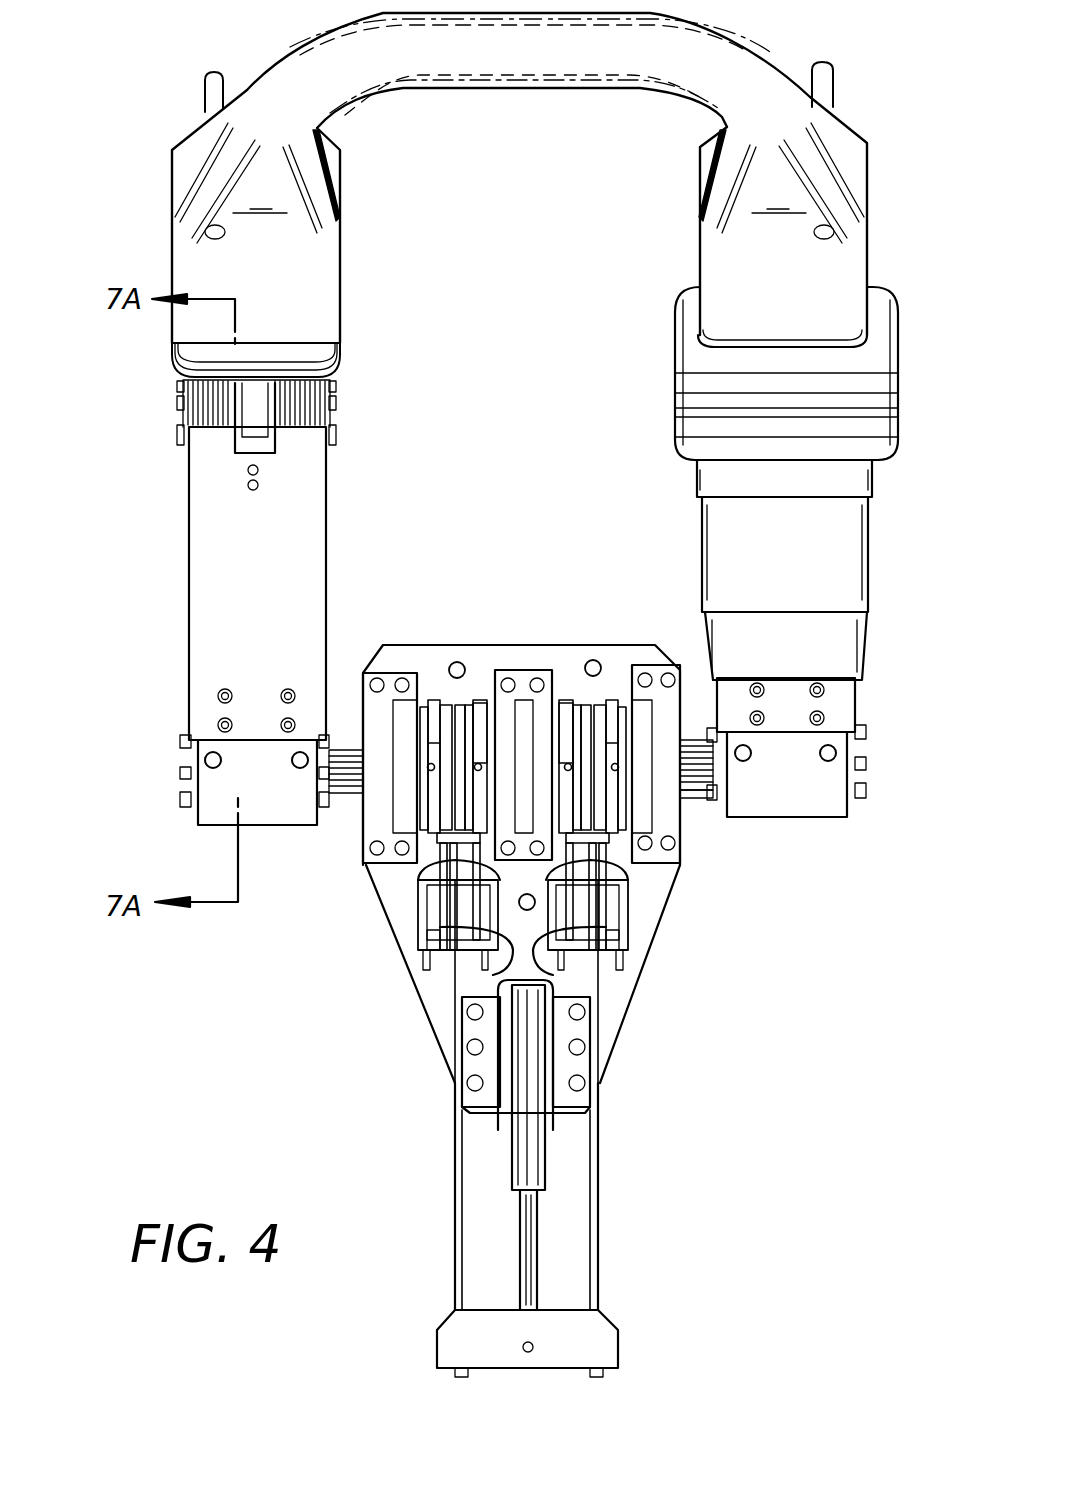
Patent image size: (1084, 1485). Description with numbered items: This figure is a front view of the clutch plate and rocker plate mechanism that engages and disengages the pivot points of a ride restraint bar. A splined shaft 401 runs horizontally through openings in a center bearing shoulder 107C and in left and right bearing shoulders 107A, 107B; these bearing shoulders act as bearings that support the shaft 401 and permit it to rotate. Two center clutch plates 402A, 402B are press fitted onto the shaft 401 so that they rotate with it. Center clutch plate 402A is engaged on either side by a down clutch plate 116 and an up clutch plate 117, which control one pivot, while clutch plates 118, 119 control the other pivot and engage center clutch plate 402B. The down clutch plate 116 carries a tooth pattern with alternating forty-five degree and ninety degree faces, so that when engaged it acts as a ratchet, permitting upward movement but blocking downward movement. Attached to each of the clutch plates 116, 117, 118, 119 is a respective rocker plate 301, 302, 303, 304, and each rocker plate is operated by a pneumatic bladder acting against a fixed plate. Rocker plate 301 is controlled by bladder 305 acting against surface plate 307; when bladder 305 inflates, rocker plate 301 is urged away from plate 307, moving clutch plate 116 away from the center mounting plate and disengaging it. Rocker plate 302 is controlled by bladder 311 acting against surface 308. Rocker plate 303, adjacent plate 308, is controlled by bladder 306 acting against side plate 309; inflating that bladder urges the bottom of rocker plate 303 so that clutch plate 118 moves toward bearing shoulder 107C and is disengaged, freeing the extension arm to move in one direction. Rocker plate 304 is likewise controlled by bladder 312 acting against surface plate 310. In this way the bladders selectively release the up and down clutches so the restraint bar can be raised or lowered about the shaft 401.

The left bearing shoulder 107A is at (362, 705).
The right bearing shoulder 107B is at (707, 675).
The center bearing shoulder 107C is at (523, 707).
The down clutch plate 116 is at (368, 718).
The up clutch plate 117 is at (477, 703).
The clutch plate 118 is at (583, 700).
The clutch plate 119 is at (627, 697).
The center clutch plate 402A is at (443, 702).
The center clutch plate 402B is at (605, 703).
The splined shaft 401 is at (695, 790).
The rocker plate 301 is at (434, 945).
The rocker plate 302 is at (460, 955).
The rocker plate 303 is at (595, 960).
The rocker plate 304 is at (612, 945).
The pneumatic bladder 305 is at (426, 880).
The pneumatic bladder 306 is at (590, 847).
The surface plate 307 is at (413, 910).
The surface plate 308 is at (500, 945).
The side plate 309 is at (560, 945).
The surface plate 310 is at (633, 910).
The bladder 311 is at (456, 847).
The bladder 312 is at (620, 880).